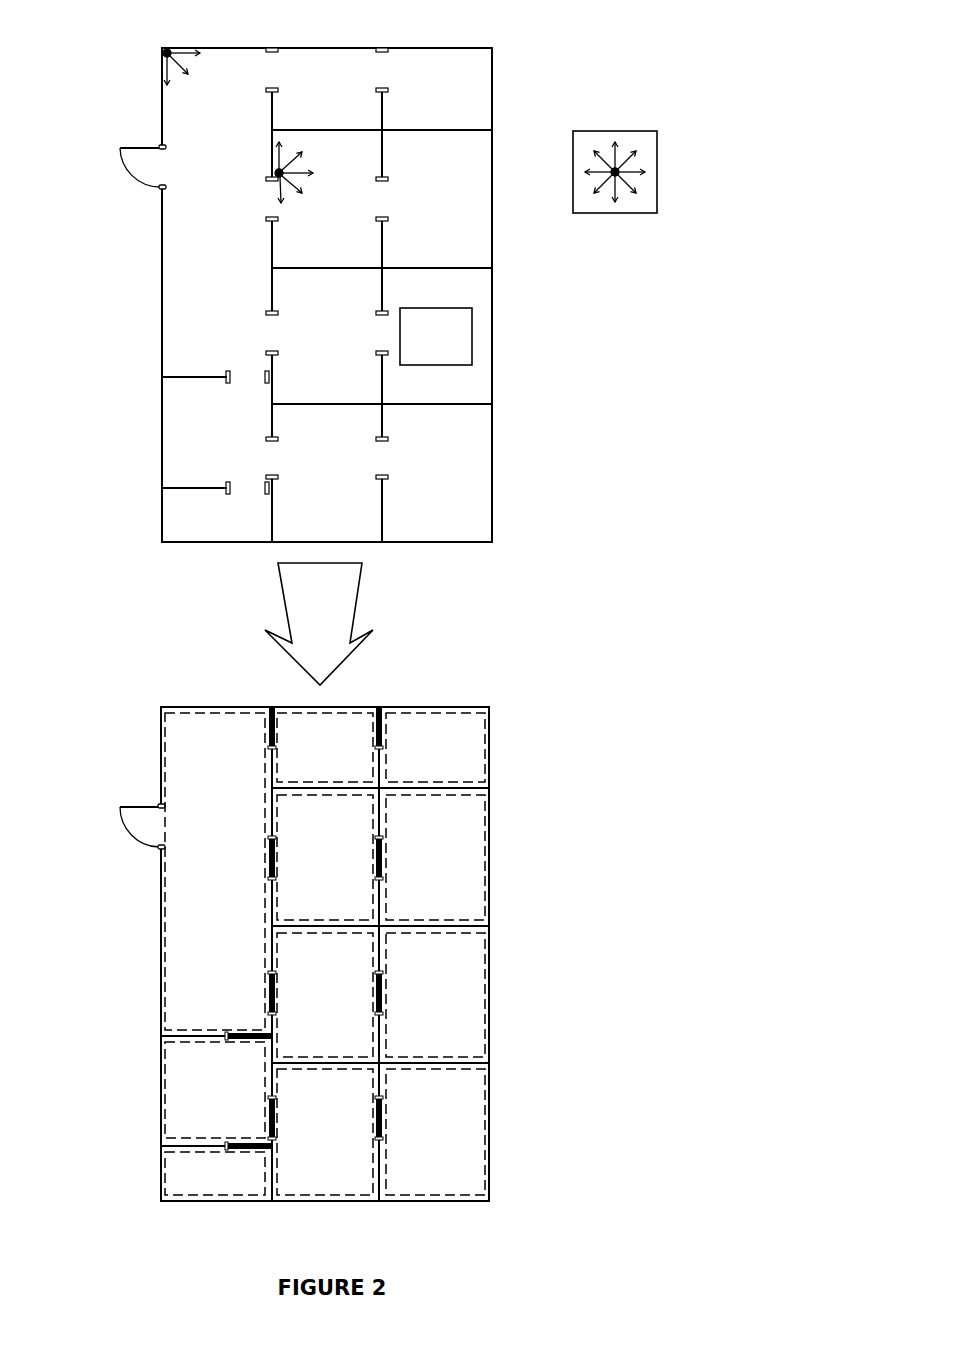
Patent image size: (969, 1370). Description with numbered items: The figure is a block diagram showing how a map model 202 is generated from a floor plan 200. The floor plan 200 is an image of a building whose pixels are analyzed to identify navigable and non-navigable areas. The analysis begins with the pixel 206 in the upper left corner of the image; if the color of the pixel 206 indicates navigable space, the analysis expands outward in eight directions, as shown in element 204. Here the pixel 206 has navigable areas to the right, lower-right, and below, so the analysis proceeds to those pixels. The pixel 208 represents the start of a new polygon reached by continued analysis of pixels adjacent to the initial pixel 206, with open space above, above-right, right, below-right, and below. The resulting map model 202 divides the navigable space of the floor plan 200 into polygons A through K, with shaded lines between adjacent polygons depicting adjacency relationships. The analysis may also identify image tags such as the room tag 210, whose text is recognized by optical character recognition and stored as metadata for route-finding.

The floor plan 200 is at (438, 50).
The map model 202 is at (435, 707).
The element showing expansion in 8 directions 204 is at (617, 131).
The pixel 206 is at (162, 57).
The pixel 208 is at (282, 177).
The room tag 210 is at (472, 330).